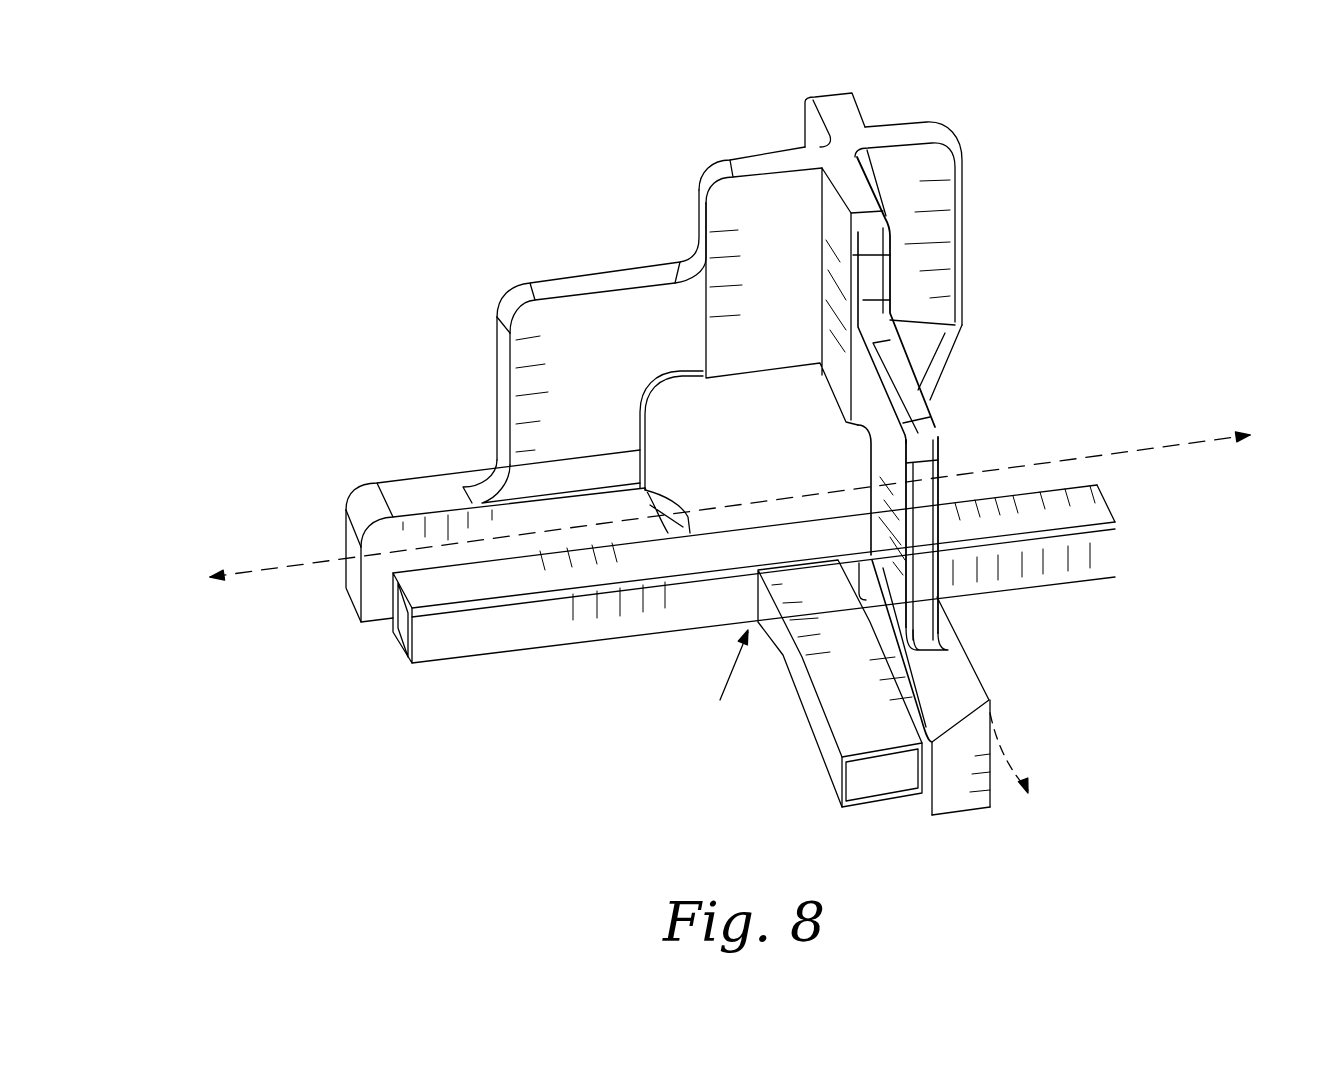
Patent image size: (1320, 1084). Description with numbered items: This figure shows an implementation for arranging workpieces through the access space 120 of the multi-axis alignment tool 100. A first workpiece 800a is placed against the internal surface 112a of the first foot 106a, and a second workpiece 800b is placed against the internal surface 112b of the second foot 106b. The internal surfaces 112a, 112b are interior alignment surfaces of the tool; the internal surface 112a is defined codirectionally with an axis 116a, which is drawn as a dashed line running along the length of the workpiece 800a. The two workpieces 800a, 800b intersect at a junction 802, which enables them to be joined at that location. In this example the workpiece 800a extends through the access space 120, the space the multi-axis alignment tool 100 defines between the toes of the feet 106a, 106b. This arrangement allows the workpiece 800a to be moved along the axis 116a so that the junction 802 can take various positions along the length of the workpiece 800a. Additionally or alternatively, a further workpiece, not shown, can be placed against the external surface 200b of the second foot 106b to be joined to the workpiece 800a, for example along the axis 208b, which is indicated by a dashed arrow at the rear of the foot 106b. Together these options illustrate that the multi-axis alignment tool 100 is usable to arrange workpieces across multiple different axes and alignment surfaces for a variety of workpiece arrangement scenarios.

The multi-axis alignment tool 100 is at (567, 102).
The first foot 106a is at (368, 500).
The second foot 106b is at (965, 730).
The internal surface 112a is at (385, 592).
The internal surface 112b is at (930, 797).
The axis 116a is at (210, 572).
The access space 120 is at (786, 465).
The external surface 200b is at (990, 792).
The axis 208b is at (1030, 790).
The workpiece 800a is at (490, 660).
The workpiece 800b is at (805, 730).
The junction 802 is at (731, 725).